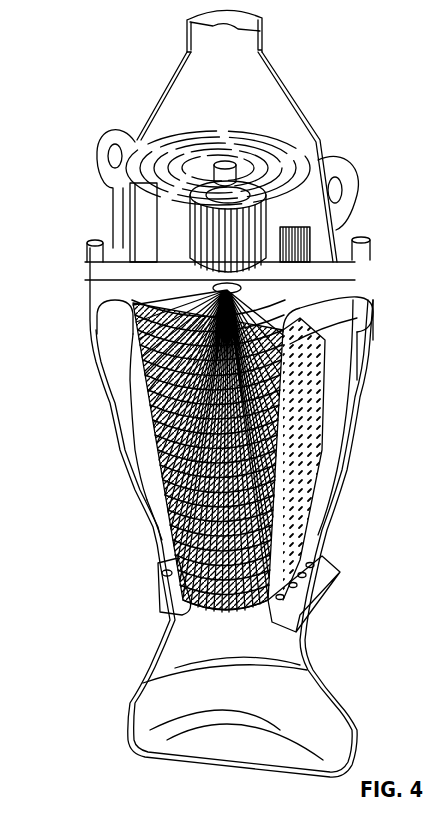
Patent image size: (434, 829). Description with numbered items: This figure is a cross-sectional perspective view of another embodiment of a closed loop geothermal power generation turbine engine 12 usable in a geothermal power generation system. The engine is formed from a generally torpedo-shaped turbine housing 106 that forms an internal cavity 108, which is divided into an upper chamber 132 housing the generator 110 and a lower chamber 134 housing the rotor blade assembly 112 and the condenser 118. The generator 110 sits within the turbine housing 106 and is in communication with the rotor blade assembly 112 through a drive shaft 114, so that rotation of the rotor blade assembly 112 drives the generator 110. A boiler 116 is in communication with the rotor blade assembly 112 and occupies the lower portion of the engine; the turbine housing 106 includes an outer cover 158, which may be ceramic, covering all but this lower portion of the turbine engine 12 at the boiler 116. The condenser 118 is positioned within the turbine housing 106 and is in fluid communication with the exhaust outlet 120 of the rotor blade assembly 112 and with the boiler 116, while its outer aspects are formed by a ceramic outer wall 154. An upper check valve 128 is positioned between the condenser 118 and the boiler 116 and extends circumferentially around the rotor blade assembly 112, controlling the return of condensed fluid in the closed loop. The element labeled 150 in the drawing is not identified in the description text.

The closed loop geothermal power generation turbine engine 12 is at (347, 119).
The turbine housing 106 is at (118, 448).
The internal cavity 108 is at (358, 356).
The generator 110 is at (284, 136).
The rotor blade assembly 112 is at (127, 328).
The drive shaft 114 is at (98, 264).
The boiler 116 is at (157, 705).
The condenser 118 is at (126, 376).
The exhaust outlet 120 is at (346, 282).
The upper check valve 128 is at (172, 598).
The upper chamber 132 is at (253, 86).
The lower chamber 134 is at (345, 396).
The brush 150 is at (135, 356).
The ceramic outer wall 154 is at (112, 405).
The outer cover 158 is at (143, 497).